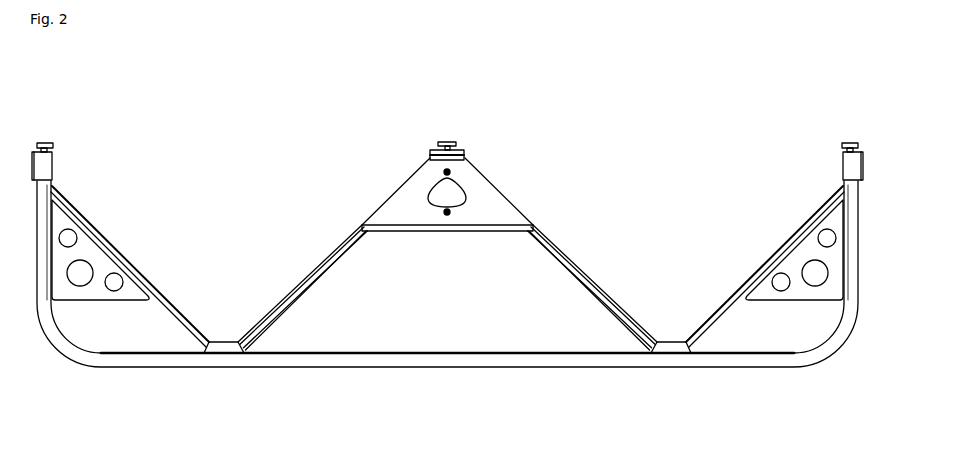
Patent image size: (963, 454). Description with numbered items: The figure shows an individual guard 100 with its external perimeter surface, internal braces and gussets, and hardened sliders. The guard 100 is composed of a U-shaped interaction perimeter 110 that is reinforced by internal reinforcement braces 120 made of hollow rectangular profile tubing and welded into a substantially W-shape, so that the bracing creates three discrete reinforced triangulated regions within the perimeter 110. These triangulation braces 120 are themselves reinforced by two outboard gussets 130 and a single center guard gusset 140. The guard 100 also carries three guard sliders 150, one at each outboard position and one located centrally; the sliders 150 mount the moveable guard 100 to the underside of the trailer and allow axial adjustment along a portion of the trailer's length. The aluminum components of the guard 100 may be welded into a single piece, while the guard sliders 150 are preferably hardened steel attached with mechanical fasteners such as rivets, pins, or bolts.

The guard 100 is at (412, 158).
The U-shaped interaction perimeter 110 is at (352, 357).
The internal reinforcement braces 120 is at (173, 313).
The outboard gussets 130 is at (95, 264).
The center guard gusset 140 is at (488, 197).
The guard sliders 150 is at (58, 143).